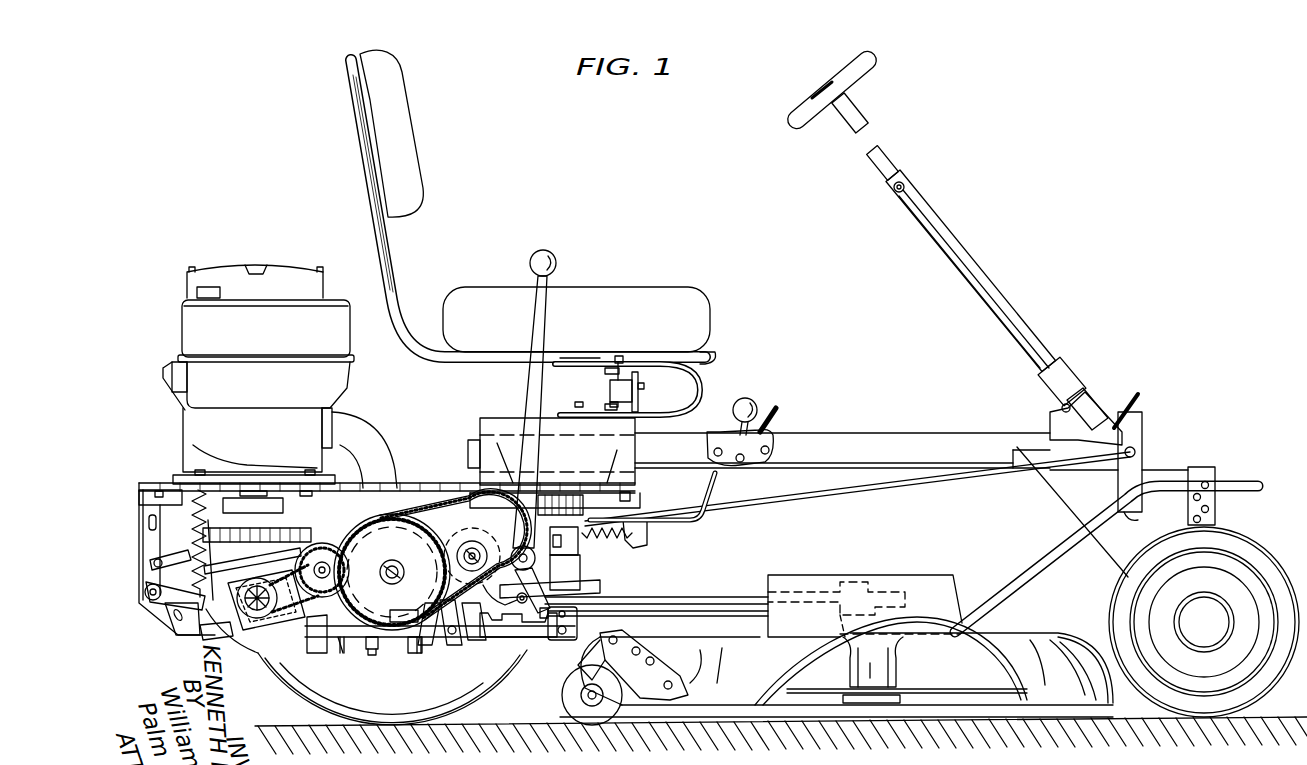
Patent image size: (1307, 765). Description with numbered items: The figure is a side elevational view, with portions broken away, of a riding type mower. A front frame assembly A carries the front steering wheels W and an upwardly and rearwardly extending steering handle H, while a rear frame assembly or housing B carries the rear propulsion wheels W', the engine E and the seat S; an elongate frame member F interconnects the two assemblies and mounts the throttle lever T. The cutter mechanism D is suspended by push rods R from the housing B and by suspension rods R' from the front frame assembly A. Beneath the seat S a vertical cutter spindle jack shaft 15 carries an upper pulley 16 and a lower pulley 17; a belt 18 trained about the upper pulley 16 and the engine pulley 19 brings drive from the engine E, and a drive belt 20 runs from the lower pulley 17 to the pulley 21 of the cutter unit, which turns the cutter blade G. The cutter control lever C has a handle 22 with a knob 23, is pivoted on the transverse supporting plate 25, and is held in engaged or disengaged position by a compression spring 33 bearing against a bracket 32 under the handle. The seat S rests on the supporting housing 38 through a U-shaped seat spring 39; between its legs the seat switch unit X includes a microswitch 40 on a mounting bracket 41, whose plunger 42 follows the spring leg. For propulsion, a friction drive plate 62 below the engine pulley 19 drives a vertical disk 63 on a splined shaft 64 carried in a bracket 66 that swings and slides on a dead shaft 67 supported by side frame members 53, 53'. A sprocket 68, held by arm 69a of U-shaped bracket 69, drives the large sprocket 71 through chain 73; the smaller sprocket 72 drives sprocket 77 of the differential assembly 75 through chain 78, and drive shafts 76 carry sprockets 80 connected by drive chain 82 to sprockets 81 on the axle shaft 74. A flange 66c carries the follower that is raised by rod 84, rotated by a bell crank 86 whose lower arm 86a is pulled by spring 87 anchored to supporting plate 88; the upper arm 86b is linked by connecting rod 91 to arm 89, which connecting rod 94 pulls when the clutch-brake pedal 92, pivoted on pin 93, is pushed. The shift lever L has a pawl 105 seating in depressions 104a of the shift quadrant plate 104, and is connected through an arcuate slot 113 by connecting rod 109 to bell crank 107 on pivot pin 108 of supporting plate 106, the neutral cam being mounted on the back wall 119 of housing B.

The rear frame assembly or housing B is at (140, 476).
The engine E is at (265, 338).
The seat S is at (645, 258).
The shift lever L is at (526, 255).
The steering handle H is at (980, 247).
The elongate frame member F is at (908, 428).
The front frame assembly A is at (1158, 444).
The front steering wheels W is at (1204, 613).
The rear propulsion wheels W' is at (392, 687).
The push rods R is at (658, 626).
The suspension rods R' is at (1106, 549).
The cutter mechanism D is at (1013, 619).
The cutter blade G is at (953, 666).
The cutter control lever C is at (706, 526).
The throttle or control lever T is at (784, 414).
The seat switch unit X is at (594, 389).
The cutter spindle jack shaft 15 is at (556, 570).
The upper pulley 16 is at (560, 500).
The lower pulley 17 is at (575, 586).
The belt 18 is at (360, 490).
The engine pulley 19 is at (216, 560).
The drive belt 20 is at (670, 598).
The pulley of the cutter unit 21 is at (897, 582).
The handle portion 22 is at (700, 490).
The knob 23 is at (742, 407).
The supporting plate 25 is at (585, 550).
The bracket 32 is at (647, 532).
The helical compression spring 33 is at (612, 540).
The supporting housing 38 is at (508, 418).
The U-shaped seat spring 39 is at (703, 390).
The microswitch 40 is at (610, 393).
The mounting bracket 41 is at (640, 400).
The plunger 42 is at (615, 370).
The side frame member 53 is at (574, 624).
The side frame member 53' is at (644, 502).
The friction drive plate 62 is at (295, 516).
The friction driven wheel or disk 63 is at (228, 649).
The splined shaft 64 is at (264, 614).
The bracket 66 is at (232, 601).
The flange 66c is at (210, 640).
The dead supporting shaft 67 is at (392, 570).
The sprocket 68 is at (262, 572).
The U-shaped bracket 69 is at (338, 635).
The rearwardly extending arm 69a is at (306, 637).
The large sprocket 71 is at (325, 560).
The smaller sprocket 72 is at (354, 592).
The chain 73 is at (287, 557).
The axle shaft 74 is at (450, 594).
The differential assembly 75 is at (508, 532).
The drive shafts 76 is at (445, 580).
The sprocket 77 is at (456, 498).
The chain 78 is at (412, 508).
The sprockets 80 is at (445, 560).
The sprockets 81 is at (406, 607).
The drive chain 82 is at (468, 545).
The rotatable rod 84 is at (145, 592).
The bell crank 86 is at (155, 611).
The lower arm 86a is at (190, 602).
The upper arm 86b is at (150, 580).
The spring 87 is at (198, 545).
The horizontal supporting plate 88 is at (160, 490).
The link or arm 89 is at (584, 508).
The connecting rod 91 is at (210, 575).
The clutch-brake pedal 92 is at (1118, 478).
The pivot pin 93 is at (1138, 522).
The connecting rod 94 is at (820, 490).
The shift quadrant plate 104 is at (560, 636).
The depressions 104a is at (500, 638).
The spring loaded pawl 105 is at (534, 640).
The supporting plate 106 is at (415, 653).
The bell crank 107 is at (390, 616).
The pivot pin 108 is at (371, 655).
The connecting rod 109 is at (458, 632).
The arcuate slot 113 is at (470, 628).
The back wall 119 is at (140, 536).